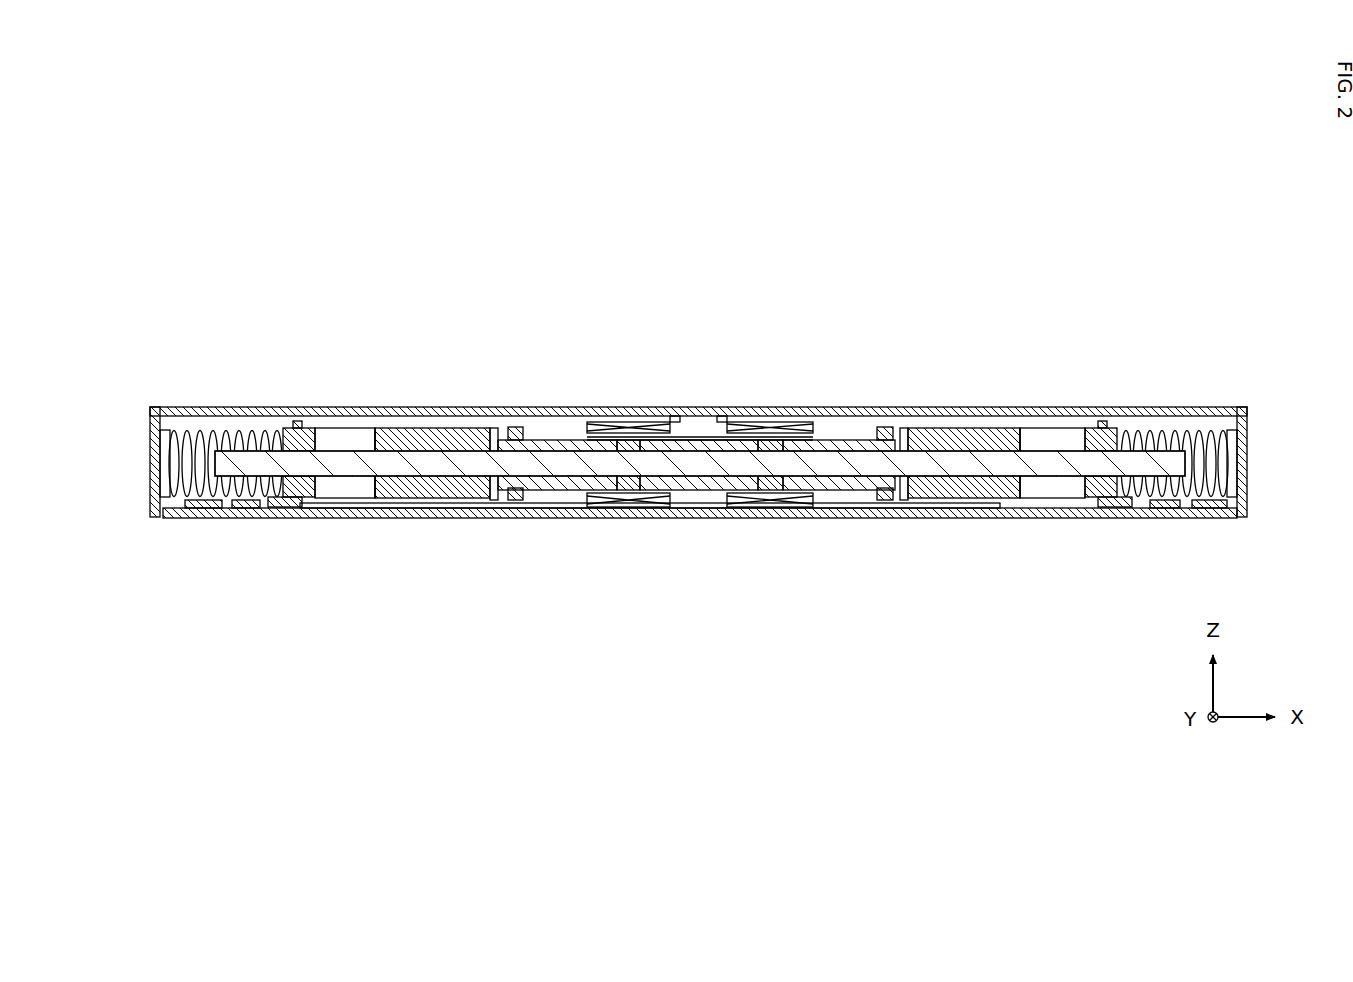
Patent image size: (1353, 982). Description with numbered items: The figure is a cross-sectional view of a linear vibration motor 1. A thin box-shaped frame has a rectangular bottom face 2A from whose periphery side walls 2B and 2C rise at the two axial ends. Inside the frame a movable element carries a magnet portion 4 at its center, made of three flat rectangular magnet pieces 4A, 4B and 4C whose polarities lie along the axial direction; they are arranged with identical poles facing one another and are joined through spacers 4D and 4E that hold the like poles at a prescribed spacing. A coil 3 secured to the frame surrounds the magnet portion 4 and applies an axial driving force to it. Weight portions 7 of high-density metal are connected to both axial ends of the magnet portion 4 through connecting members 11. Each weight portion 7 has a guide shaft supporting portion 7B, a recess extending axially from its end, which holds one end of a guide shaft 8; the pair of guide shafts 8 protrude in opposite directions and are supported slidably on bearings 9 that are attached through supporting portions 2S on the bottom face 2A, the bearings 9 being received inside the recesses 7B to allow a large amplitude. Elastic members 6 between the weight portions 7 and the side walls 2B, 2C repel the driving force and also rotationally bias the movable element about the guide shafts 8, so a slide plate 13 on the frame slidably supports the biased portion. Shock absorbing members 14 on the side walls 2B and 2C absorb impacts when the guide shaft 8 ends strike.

The linear vibration motor 1 is at (1012, 275).
The bottom face 2A is at (995, 508).
The side wall 2B is at (152, 440).
The side wall 2C is at (1250, 440).
The supporting portion 2S is at (298, 421).
The coil 3 is at (622, 422).
The magnet portion 4 is at (696, 532).
The magnet piece 4A is at (548, 490).
The magnet piece 4B is at (697, 490).
The magnet piece 4C is at (839, 509).
The spacer 4D is at (632, 493).
The spacer 4E is at (766, 493).
The elastic member 6 is at (230, 498).
The weight portion 7 is at (445, 428).
The guide shaft supporting portion 7B is at (372, 430).
The guide shaft 8 is at (343, 492).
The bearing 9 is at (292, 430).
The connecting member 11 is at (513, 427).
The slide plate 13 is at (470, 503).
The shock absorbing member 14 is at (184, 455).